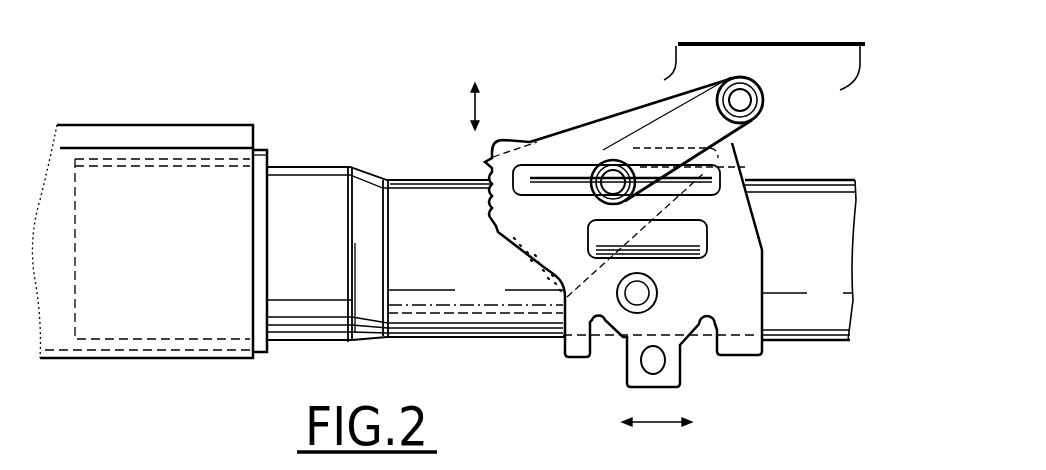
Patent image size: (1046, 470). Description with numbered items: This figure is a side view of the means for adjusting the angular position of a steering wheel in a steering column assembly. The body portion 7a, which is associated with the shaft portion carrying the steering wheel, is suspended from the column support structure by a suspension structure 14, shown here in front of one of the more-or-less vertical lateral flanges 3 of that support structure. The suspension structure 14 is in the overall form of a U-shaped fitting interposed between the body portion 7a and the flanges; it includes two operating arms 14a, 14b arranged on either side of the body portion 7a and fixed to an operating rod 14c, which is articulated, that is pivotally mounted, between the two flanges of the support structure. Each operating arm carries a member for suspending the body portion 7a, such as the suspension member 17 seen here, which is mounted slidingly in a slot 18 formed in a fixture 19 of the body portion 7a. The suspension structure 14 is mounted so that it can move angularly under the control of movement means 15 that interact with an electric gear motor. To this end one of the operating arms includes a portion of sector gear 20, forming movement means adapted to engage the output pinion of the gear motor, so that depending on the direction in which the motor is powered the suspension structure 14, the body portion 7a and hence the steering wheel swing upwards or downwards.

The lateral flange 3 is at (790, 42).
The body portion 7a is at (845, 135).
The suspension structure 14 is at (714, 126).
The operating arm 14a is at (610, 114).
The operating arm 14b is at (738, 148).
The operating rod 14c is at (752, 100).
The movement means 15 is at (526, 137).
The suspension member 17 is at (611, 184).
The slot 18 is at (722, 207).
The fixture 19 is at (764, 315).
The sector gear portion 20 is at (517, 257).